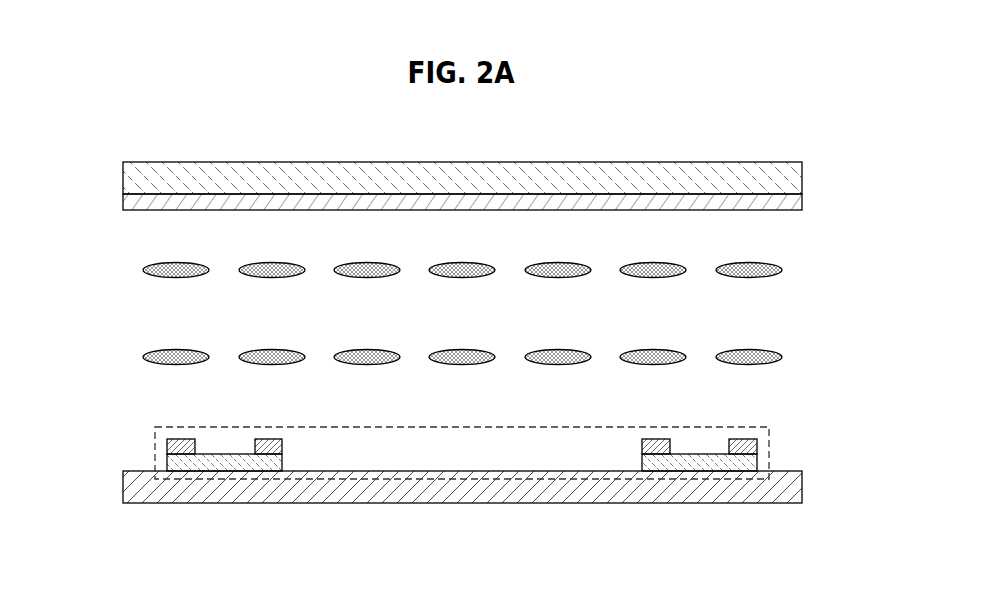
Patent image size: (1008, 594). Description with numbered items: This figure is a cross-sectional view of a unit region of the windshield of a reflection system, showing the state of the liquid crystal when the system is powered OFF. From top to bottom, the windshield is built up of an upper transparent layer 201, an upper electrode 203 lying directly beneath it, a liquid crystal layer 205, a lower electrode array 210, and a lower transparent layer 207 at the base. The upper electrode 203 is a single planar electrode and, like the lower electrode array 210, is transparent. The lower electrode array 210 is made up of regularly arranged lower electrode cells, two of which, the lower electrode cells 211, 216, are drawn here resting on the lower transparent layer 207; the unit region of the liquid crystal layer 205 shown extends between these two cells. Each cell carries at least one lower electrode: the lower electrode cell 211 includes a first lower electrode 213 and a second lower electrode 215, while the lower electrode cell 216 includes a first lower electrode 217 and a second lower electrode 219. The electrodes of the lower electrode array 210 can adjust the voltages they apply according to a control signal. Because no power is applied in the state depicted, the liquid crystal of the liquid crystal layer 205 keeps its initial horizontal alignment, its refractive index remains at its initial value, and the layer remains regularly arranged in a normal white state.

The upper transparent layer 201 is at (135, 178).
The upper electrode 203 is at (135, 203).
The liquid crystal layer 205 is at (133, 310).
The lower transparent layer 207 is at (787, 490).
The lower electrode array 210 is at (155, 447).
The lower electrode cell 211 is at (227, 462).
The first lower electrode 213 is at (180, 448).
The second lower electrode 215 is at (268, 448).
The lower electrode cell 216 is at (695, 462).
The first lower electrode 217 is at (657, 448).
The second lower electrode 219 is at (745, 448).